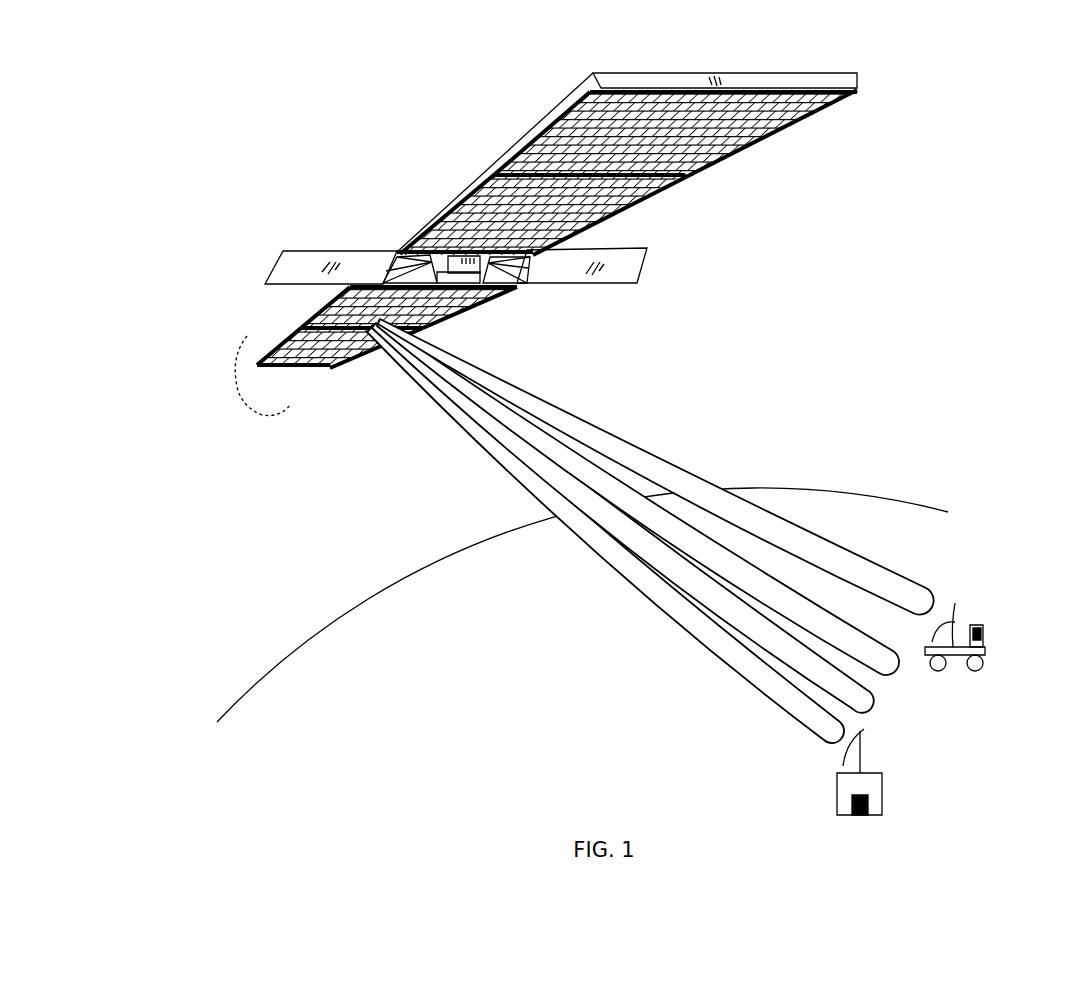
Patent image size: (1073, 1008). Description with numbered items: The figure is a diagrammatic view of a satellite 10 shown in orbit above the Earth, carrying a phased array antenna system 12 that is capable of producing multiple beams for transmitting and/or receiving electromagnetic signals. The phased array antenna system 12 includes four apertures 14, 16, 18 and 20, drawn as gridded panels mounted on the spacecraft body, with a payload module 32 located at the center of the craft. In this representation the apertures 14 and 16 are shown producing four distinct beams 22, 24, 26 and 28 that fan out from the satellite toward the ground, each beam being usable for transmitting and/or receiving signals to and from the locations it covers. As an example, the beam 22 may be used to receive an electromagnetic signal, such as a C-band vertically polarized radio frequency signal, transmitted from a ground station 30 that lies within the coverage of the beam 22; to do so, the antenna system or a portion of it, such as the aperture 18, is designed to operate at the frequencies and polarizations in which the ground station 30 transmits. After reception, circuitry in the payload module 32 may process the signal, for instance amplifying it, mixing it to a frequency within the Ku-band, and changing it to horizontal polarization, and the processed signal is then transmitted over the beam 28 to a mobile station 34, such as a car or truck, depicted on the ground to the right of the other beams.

The satellite 10 is at (288, 103).
The phased array antenna system 12 is at (232, 379).
The aperture 14 is at (648, 193).
The aperture 16 is at (708, 168).
The aperture 18 is at (315, 373).
The aperture 20 is at (478, 305).
The beam 22 is at (637, 592).
The beam 24 is at (872, 710).
The beam 26 is at (897, 677).
The beam 28 is at (830, 538).
The ground station 30 is at (835, 798).
The payload module 32 is at (452, 245).
The mobile station 34 is at (977, 623).